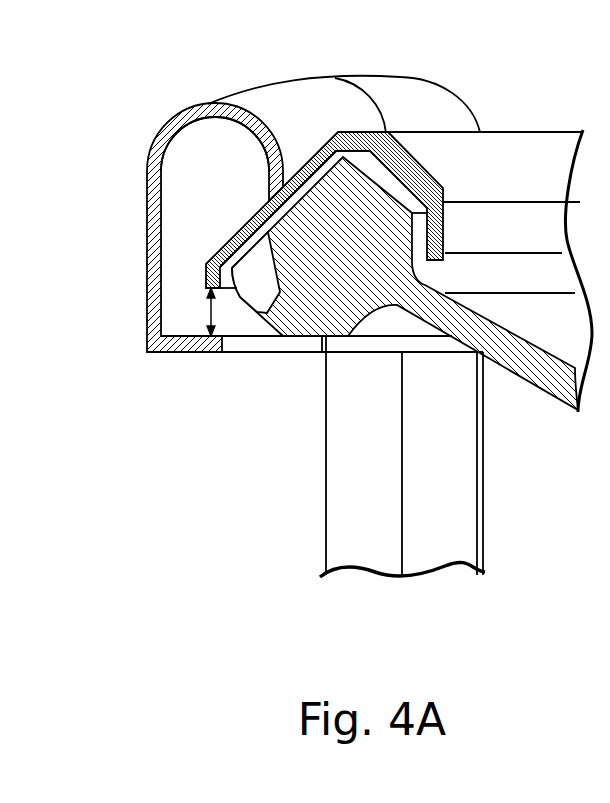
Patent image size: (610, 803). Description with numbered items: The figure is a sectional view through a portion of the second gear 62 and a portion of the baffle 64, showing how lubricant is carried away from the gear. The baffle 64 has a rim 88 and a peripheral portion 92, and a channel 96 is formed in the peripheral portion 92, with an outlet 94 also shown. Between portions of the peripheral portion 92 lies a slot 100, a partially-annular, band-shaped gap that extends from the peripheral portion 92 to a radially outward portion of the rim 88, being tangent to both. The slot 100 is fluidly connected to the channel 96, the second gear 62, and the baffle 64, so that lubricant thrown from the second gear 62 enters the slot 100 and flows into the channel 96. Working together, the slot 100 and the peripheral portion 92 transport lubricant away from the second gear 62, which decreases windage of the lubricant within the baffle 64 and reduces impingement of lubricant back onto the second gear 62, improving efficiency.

The second gear 62 is at (360, 166).
The baffle 64 is at (498, 166).
The rim 88 is at (323, 150).
The peripheral portion 92 is at (147, 262).
The outlet 94 is at (326, 478).
The channel 96 is at (192, 188).
The slot 100 is at (211, 312).